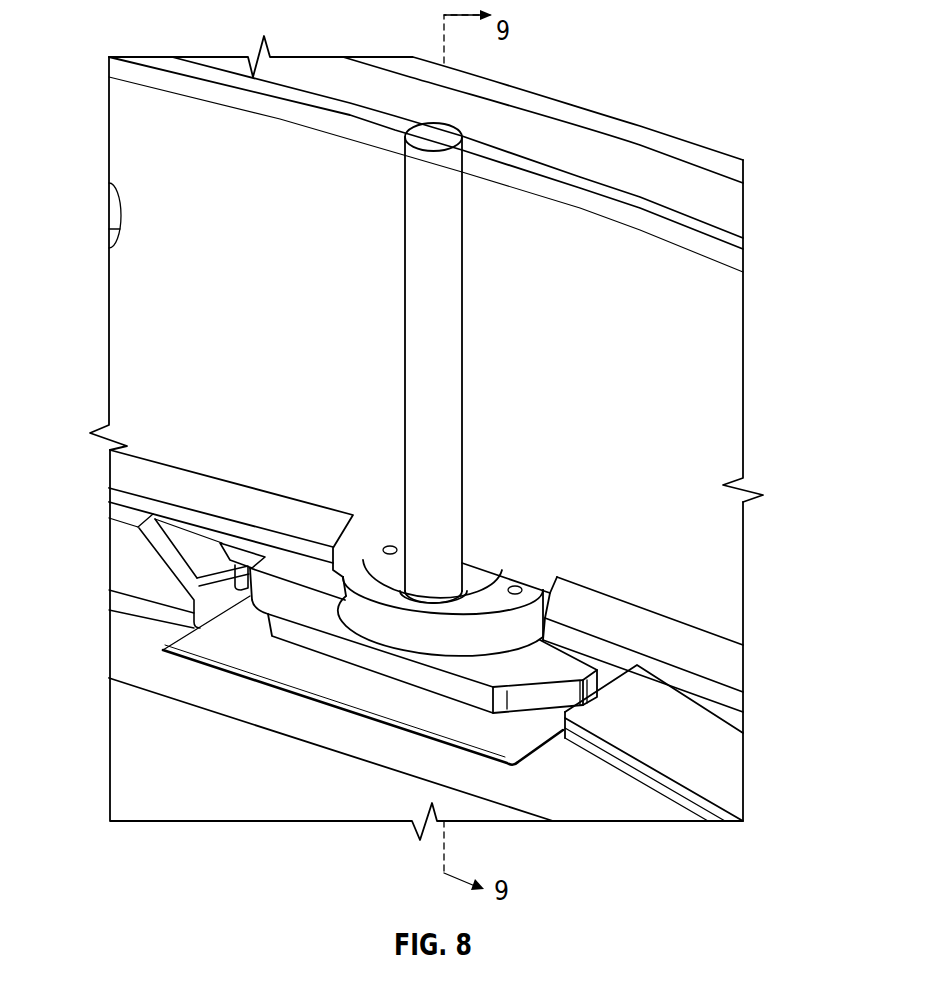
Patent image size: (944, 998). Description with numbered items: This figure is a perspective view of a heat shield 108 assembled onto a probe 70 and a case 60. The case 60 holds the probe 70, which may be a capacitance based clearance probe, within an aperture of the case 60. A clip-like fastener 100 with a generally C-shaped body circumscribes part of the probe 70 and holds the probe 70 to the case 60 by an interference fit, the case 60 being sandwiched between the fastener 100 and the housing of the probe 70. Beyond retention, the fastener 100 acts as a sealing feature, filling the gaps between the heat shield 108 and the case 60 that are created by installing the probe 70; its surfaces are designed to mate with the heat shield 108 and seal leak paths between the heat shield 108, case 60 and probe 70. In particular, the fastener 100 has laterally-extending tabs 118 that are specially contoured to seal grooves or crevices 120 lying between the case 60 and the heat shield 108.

The heat shield 108 is at (708, 431).
The case 60 is at (185, 690).
The grooves or crevices 120 is at (182, 586).
The laterally-extending tabs 118 is at (246, 558).
The probe 70 is at (475, 587).
The fastener 100 is at (567, 675).